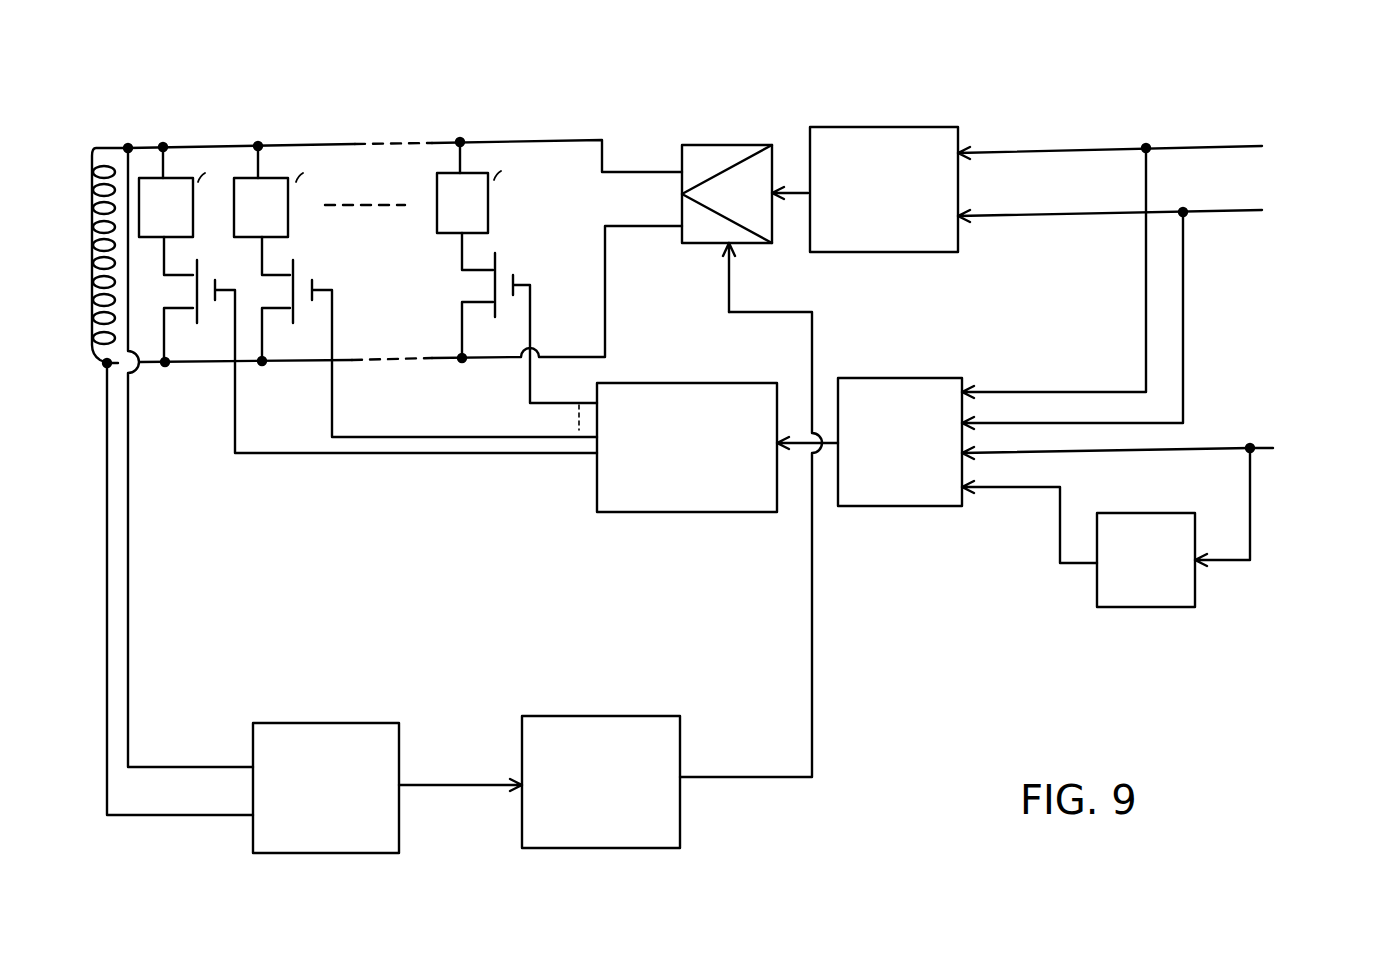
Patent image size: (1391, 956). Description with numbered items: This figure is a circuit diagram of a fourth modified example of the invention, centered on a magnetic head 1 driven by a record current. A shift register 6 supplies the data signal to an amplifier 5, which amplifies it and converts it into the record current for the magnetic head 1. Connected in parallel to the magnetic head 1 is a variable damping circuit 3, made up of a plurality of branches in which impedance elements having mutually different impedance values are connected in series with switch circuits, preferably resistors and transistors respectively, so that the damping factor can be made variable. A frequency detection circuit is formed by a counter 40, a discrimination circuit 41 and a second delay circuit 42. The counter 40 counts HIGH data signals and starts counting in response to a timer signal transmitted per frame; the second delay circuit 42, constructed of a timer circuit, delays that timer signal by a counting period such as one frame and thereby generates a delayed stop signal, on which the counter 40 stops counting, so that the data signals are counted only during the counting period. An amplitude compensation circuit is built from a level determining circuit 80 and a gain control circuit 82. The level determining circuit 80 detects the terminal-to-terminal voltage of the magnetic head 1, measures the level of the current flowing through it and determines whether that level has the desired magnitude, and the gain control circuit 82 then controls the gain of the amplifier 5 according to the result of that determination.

The magnetic head 1 is at (110, 130).
The variable damping circuit 3 is at (488, 123).
The amplifier 5 is at (725, 145).
The shift register 6 is at (912, 127).
The counter 40 is at (905, 378).
The discrimination circuit 41 is at (675, 383).
The second delay circuit 42 is at (1152, 607).
The level determining circuit 80 is at (338, 723).
The gain control circuit 82 is at (617, 716).